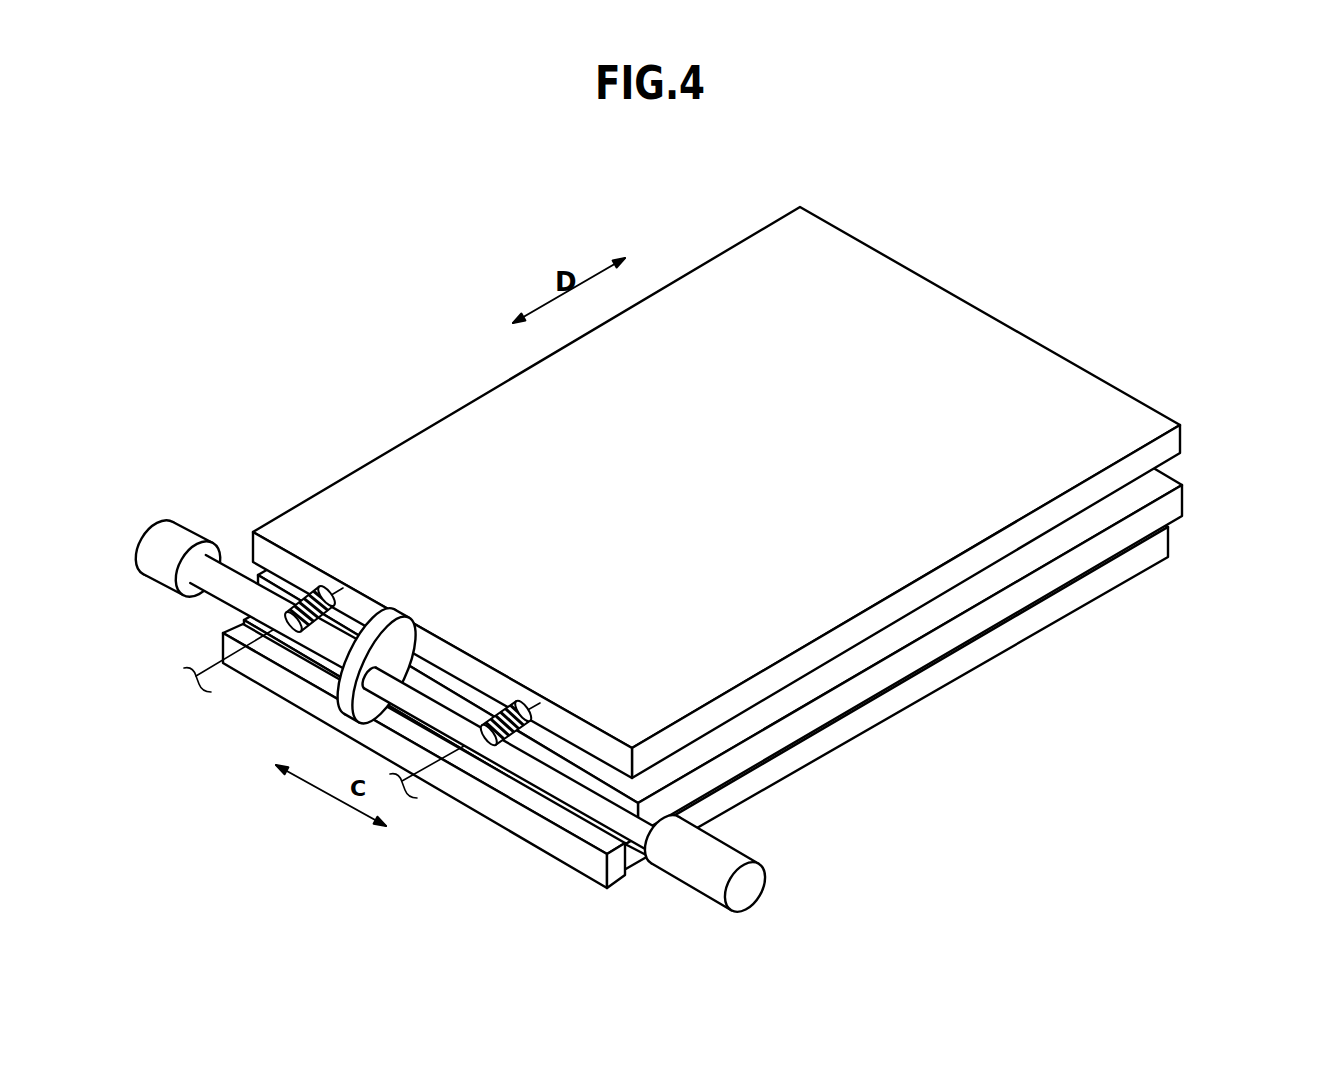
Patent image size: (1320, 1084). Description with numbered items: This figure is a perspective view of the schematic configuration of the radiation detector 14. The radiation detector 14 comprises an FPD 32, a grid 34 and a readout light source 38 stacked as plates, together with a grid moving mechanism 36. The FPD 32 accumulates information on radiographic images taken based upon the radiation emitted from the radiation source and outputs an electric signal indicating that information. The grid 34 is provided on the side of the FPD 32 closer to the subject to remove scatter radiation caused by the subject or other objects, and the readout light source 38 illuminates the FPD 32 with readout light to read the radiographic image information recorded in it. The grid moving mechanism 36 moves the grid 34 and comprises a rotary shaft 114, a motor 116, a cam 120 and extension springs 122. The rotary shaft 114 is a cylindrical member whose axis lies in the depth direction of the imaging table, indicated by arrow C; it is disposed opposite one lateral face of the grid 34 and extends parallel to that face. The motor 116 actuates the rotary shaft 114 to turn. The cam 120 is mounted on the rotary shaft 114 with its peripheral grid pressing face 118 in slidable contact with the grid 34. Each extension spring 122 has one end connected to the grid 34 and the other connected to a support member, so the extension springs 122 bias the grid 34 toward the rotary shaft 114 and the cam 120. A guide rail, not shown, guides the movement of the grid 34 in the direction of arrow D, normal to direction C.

The radiation detector 14 is at (757, 538).
The FPD 32 is at (1187, 500).
The grid 34 is at (482, 447).
The grid moving mechanism 36 is at (195, 507).
The readout light source 38 is at (1168, 540).
The rotary shaft 114 is at (550, 780).
The motor 116 is at (694, 867).
The grid pressing face 118 is at (390, 608).
The cam 120 is at (426, 611).
The extension spring 122 is at (318, 596).